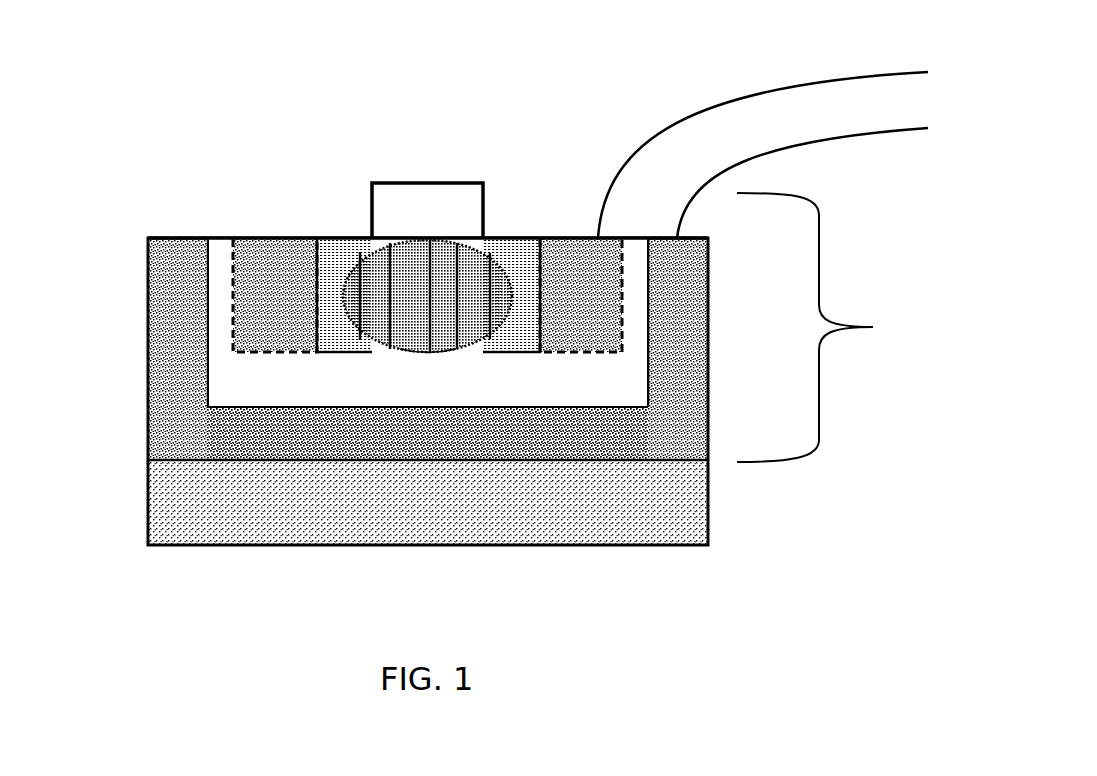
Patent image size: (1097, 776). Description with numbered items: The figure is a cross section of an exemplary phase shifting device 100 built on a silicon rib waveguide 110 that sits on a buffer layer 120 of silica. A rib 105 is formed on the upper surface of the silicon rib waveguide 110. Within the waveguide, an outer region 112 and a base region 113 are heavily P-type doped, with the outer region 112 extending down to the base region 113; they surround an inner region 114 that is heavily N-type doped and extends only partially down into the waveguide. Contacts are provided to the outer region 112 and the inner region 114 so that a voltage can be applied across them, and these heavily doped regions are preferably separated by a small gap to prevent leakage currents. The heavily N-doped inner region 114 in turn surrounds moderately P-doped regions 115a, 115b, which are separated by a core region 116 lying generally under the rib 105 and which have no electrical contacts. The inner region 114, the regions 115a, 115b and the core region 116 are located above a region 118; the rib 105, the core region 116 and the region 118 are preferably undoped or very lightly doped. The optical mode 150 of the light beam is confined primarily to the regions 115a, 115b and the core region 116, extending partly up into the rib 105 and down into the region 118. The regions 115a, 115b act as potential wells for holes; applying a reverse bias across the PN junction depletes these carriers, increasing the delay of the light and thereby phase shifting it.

The phase shifting device 100 is at (662, 59).
The rib 105 is at (423, 218).
The silicon rib waveguide 110 is at (873, 327).
The outer region 112 is at (167, 335).
The base region 113 is at (608, 438).
The inner region 114 is at (258, 287).
The doped region 115a is at (332, 252).
The doped region 115b is at (517, 267).
The core region 116 is at (470, 355).
The region 118 is at (608, 380).
The buffer layer 120 is at (680, 508).
The optical mode 150 is at (433, 298).